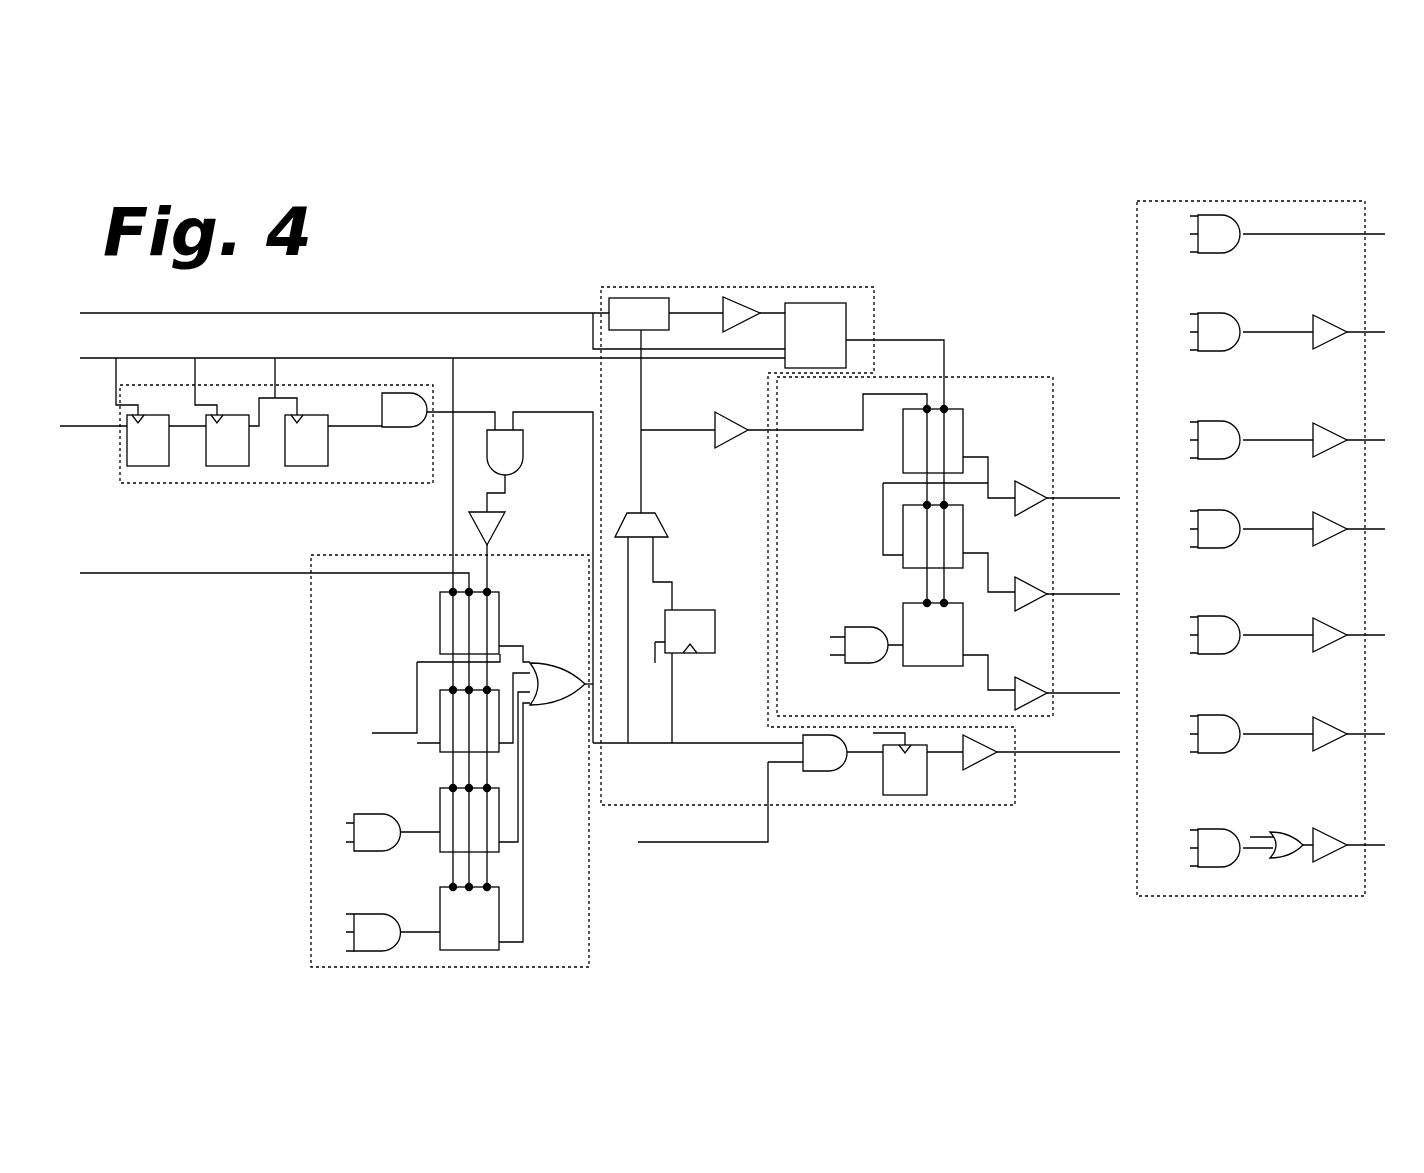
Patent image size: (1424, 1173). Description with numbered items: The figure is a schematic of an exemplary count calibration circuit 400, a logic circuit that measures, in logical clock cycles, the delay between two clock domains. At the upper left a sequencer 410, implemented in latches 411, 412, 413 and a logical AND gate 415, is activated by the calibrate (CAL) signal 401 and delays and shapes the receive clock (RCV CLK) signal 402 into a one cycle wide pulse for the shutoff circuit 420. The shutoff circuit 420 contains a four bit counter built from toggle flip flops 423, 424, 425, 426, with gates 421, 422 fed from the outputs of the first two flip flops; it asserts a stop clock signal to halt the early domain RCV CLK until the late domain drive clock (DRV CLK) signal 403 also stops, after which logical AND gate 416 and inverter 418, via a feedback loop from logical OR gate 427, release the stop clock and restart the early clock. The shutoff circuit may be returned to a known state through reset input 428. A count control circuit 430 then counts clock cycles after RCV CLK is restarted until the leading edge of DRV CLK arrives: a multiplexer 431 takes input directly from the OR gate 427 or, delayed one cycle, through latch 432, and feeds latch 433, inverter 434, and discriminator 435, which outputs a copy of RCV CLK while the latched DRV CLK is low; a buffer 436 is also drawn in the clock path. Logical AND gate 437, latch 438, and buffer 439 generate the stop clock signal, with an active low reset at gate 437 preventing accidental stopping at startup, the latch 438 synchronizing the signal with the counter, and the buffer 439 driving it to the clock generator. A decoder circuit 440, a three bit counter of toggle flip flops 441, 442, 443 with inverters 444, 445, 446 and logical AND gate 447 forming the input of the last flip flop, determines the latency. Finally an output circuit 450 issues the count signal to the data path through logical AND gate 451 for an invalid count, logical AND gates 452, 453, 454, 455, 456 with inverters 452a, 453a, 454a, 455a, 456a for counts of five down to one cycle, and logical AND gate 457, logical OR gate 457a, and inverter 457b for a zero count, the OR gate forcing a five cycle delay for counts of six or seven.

The count calibration circuit 400 is at (1006, 458).
The calibrate (CAL) signal 401 is at (113, 430).
The receive clock (RCV CLK) signal 402 is at (205, 358).
The drive clock (DRV CLK) signal 403 is at (205, 313).
The sequencer 410 is at (199, 483).
The latch 411 is at (166, 440).
The latch 412 is at (251, 432).
The latch 413 is at (333, 440).
The logical AND gate 415 is at (487, 568).
The logical AND gate 416 is at (512, 471).
The inverter 418 is at (497, 530).
The shutoff circuit 420 is at (311, 858).
The gate 421 is at (385, 832).
The gate 422 is at (385, 932).
The toggle flip flop 423 is at (440, 638).
The toggle flip flop 424 is at (440, 725).
The toggle flip flop 425 is at (440, 812).
The toggle flip flop 426 is at (440, 910).
The logical OR gate 427 is at (561, 684).
The reset input 428 is at (196, 575).
The count control circuit 430 is at (874, 332).
The multiplexer (MUX) 431 is at (662, 523).
The latch 432 is at (688, 610).
The latch 433 is at (634, 298).
The inverter 434 is at (746, 299).
The discriminator 435 is at (832, 303).
The buffer 436 is at (727, 414).
The logical AND gate 437 is at (738, 800).
The latch 438 is at (918, 764).
The buffer 439 is at (990, 765).
The decoder circuit 440 is at (1005, 377).
The toggle flip flop 441 is at (903, 437).
The toggle flip flop 442 is at (903, 528).
The toggle flip flop 443 is at (903, 606).
The inverter 444 is at (1041, 520).
The inverter 445 is at (1043, 606).
The inverter 446 is at (1015, 705).
The logical AND gate 447 is at (871, 665).
The output circuit 450 is at (1257, 201).
The logical AND gate 451 is at (1260, 234).
The logical AND gate 452 is at (1224, 332).
The inverter 452a is at (1313, 326).
The logical AND gate 453 is at (1224, 440).
The inverter 453a is at (1313, 434).
The logical AND gate 454 is at (1224, 529).
The inverter 454a is at (1313, 523).
The logical AND gate 455 is at (1224, 635).
The inverter 455a is at (1313, 629).
The logical AND gate 456 is at (1224, 734).
The inverter 456a is at (1313, 728).
The logical AND gate 457 is at (1204, 848).
The logical OR gate 457a is at (1291, 858).
The inverter 457b is at (1313, 831).